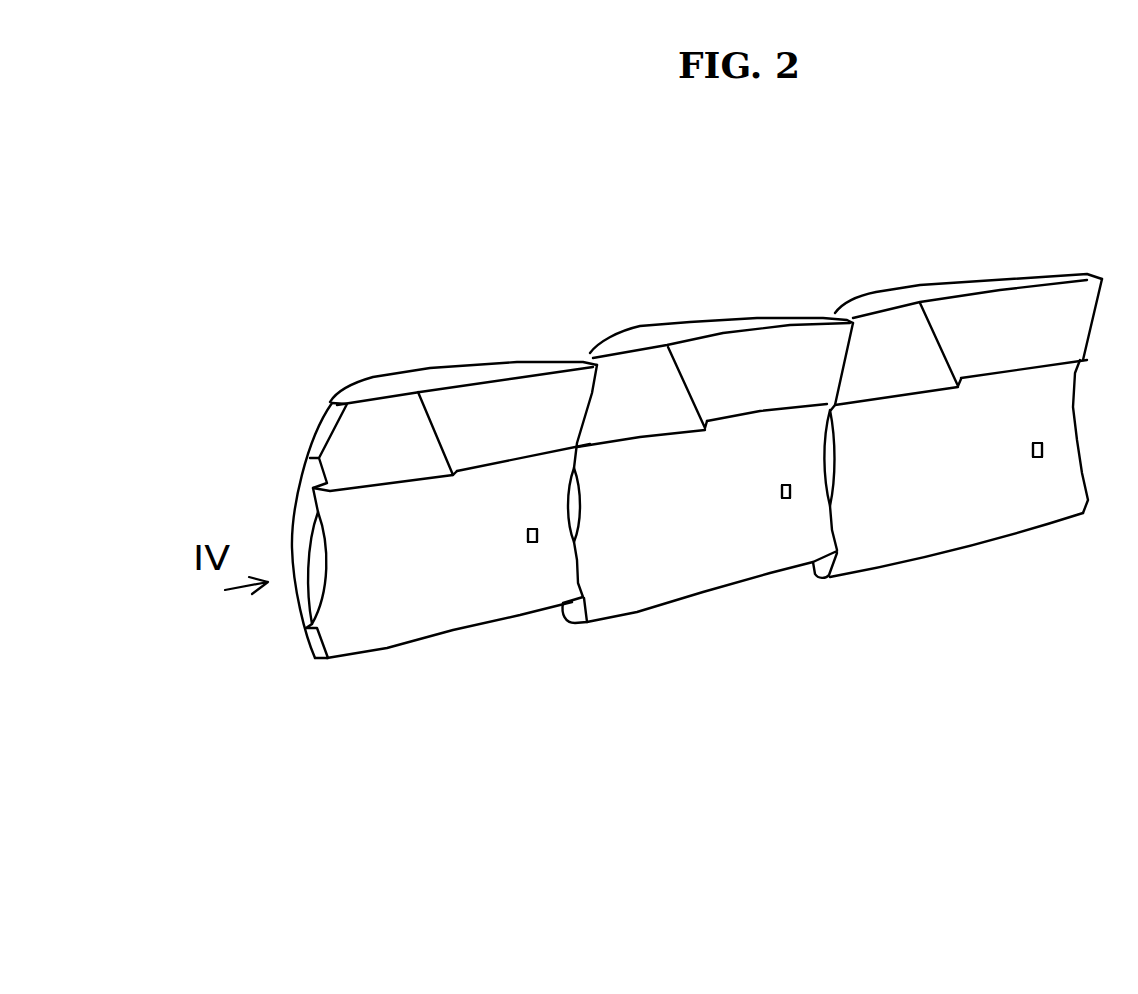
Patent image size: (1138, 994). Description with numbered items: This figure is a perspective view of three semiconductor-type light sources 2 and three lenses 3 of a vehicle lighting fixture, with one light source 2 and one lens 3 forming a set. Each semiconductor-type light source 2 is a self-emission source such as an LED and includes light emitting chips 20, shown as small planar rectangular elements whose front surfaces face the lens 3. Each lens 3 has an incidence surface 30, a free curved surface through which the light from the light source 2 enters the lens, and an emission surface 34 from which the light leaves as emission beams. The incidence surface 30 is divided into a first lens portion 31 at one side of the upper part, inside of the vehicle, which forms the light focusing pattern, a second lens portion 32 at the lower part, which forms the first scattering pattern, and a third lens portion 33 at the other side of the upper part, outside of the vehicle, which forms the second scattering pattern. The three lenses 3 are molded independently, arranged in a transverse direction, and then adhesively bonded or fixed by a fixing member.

The semiconductor-type light source 2 is at (528, 575).
The lens 3 is at (436, 345).
The light emitting chip 20 is at (538, 547).
The incidence surface 30 is at (696, 467).
The first lens portion 31 is at (357, 440).
The second lens portion 32 is at (385, 635).
The third lens portion 33 is at (483, 418).
The emission surface 34 is at (297, 513).